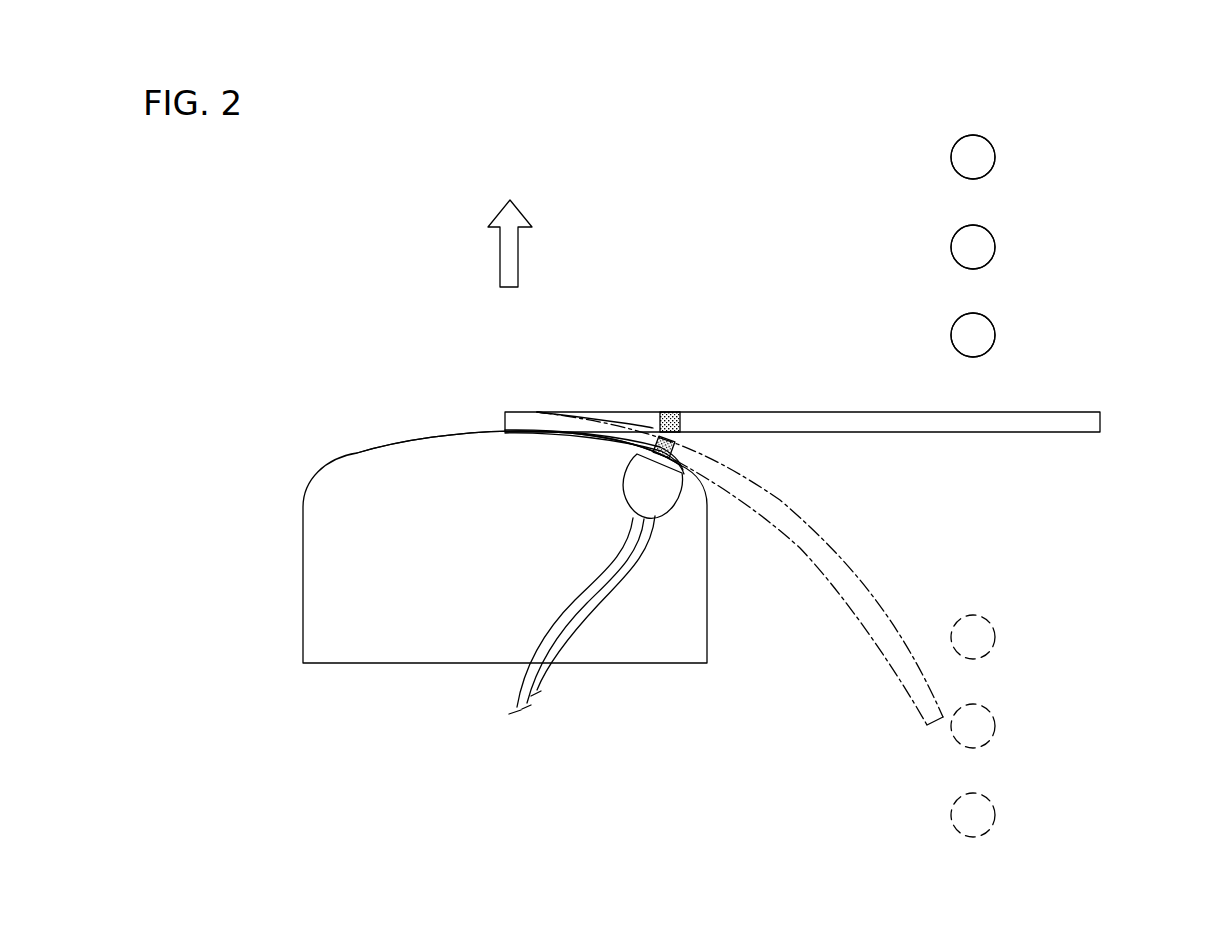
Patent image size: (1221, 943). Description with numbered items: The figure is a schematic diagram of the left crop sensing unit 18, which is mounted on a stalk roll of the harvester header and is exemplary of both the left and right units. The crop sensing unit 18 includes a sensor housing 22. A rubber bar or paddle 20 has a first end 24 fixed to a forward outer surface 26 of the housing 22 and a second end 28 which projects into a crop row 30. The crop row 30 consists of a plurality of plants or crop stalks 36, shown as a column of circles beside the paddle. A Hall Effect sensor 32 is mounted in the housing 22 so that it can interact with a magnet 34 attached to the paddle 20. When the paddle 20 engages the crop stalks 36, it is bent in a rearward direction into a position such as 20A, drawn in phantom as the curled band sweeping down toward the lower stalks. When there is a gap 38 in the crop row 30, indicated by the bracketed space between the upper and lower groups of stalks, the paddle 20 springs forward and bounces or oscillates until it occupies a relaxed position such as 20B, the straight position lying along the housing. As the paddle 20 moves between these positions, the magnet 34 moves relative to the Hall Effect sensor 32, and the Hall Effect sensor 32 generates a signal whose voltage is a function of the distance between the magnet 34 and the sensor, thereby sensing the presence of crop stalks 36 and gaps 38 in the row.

The left crop sensing unit 18 is at (443, 255).
The paddle 20 is at (813, 393).
The bent position of paddle 20A is at (840, 603).
The relaxed position of paddle 20B is at (895, 393).
The sensor housing 22 is at (358, 455).
The first end 24 is at (543, 421).
The forward outer surface 26 is at (443, 433).
The second end 28 is at (1077, 424).
The crop row 30 is at (1002, 72).
The Hall Effect sensor 32 is at (645, 490).
The magnet 34 is at (665, 411).
The crop stalks 36 is at (1023, 125).
The gap 38 is at (1123, 372).